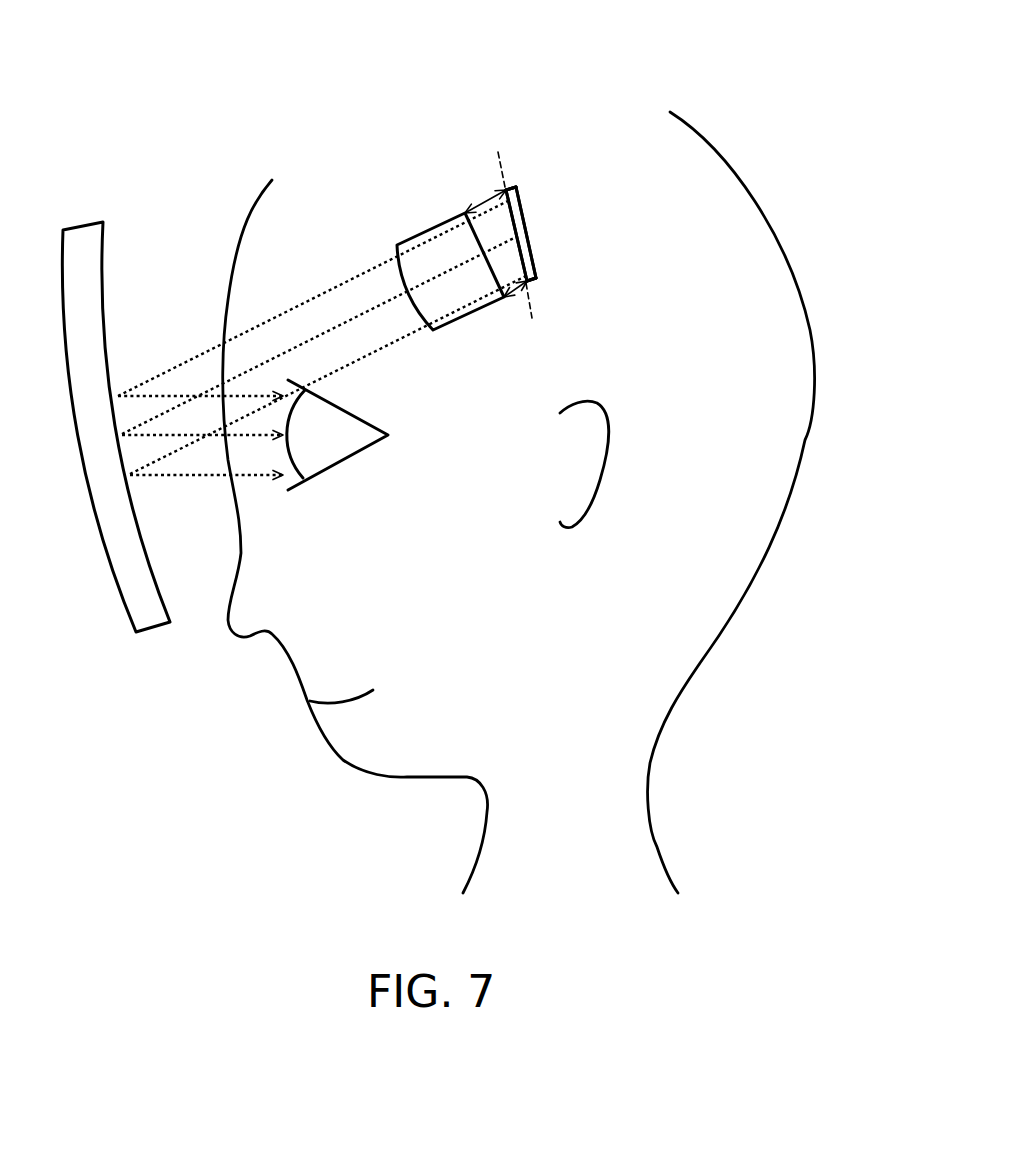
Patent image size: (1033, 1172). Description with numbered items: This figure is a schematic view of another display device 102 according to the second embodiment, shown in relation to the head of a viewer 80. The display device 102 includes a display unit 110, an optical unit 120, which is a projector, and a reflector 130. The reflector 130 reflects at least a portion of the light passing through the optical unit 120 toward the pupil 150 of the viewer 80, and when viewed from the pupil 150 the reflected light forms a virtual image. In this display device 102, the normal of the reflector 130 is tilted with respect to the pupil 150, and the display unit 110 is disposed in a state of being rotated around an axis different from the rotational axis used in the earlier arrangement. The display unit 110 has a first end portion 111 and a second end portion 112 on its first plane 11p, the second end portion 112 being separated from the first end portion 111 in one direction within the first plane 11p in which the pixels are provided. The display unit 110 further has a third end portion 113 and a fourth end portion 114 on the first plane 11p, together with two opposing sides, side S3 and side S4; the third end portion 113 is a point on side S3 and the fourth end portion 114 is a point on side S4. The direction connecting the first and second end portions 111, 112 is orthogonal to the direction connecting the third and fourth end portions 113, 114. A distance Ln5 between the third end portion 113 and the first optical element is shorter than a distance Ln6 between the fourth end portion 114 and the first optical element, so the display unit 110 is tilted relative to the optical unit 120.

The viewer 80 is at (660, 642).
The reflector 130 is at (95, 206).
The pupil 150 is at (342, 462).
The optical unit 120 is at (432, 229).
The display unit 110 is at (515, 186).
The first end portion 111 is at (517, 240).
The second end portion 112 is at (526, 232).
The third end portion 113 is at (528, 281).
The fourth end portion 114 is at (506, 190).
The first plane 11p is at (498, 152).
The display device 102 is at (500, 105).
The distance between fourth end portion and first optical element Ln6 is at (495, 196).
The distance between third end portion and first optical element Ln5 is at (513, 290).
The side S4 is at (500, 190).
The side S3 is at (525, 284).